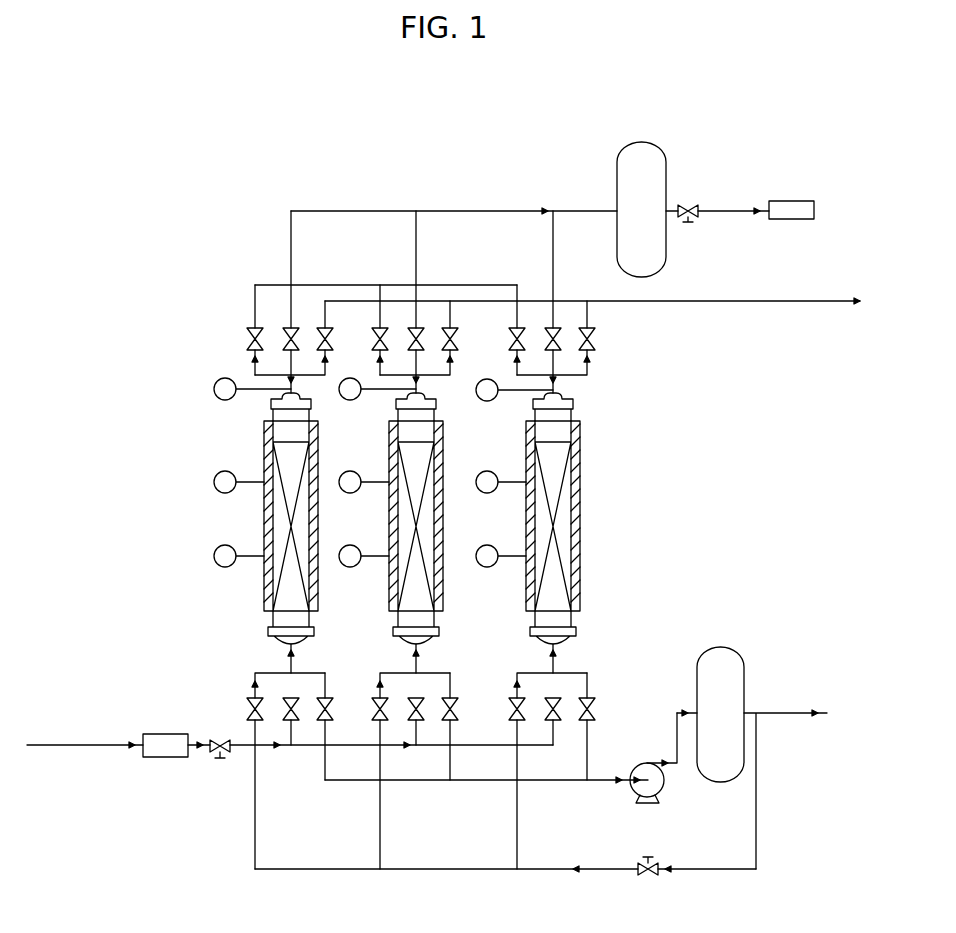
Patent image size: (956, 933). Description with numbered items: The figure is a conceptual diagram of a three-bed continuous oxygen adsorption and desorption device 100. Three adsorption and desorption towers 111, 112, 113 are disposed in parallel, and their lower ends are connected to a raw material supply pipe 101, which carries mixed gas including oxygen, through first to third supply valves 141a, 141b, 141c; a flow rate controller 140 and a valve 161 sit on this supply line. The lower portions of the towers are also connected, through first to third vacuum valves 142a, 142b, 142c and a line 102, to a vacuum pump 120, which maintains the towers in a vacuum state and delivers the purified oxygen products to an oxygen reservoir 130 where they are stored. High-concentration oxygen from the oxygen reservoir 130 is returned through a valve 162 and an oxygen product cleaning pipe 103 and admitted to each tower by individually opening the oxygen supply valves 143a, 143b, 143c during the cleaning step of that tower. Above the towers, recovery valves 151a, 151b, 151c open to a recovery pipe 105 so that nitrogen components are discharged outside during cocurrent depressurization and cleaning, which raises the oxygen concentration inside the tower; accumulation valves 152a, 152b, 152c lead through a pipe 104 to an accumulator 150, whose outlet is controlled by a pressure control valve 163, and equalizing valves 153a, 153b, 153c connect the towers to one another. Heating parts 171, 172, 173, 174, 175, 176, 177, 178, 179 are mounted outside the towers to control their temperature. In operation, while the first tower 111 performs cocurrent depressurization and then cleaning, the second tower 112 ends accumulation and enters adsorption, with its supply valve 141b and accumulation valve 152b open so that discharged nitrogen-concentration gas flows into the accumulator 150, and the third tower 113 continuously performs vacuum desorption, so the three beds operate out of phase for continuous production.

The continuous oxygen adsorption and desorption device 100 is at (115, 155).
The raw material supply pipe 101 is at (97, 745).
The line 102 is at (608, 778).
The oxygen product cleaning pipe 103 is at (603, 872).
The pipe 104 is at (580, 210).
The recovery pipe 105 is at (713, 303).
The first adsorption and desorption tower 111 is at (318, 532).
The second adsorption and desorption tower 112 is at (443, 524).
The third adsorption and desorption tower 113 is at (580, 524).
The vacuum pump 120 is at (642, 762).
The oxygen reservoir 130 is at (738, 647).
The flow rate controller 140 is at (165, 733).
The first supply valve 141a is at (291, 697).
The second supply valve 141b is at (416, 697).
The third supply valve 141c is at (554, 722).
The first vacuum valve 142a is at (325, 697).
The second vacuum valve 142b is at (450, 697).
The third vacuum valve 142c is at (587, 697).
The first oxygen supply valve 143a is at (255, 697).
The second oxygen supply valve 143b is at (380, 697).
The third oxygen supply valve 143c is at (517, 697).
The accumulator 150 is at (654, 143).
The first recovery valve 151a is at (327, 352).
The second recovery valve 151b is at (452, 352).
The third recovery valve 151c is at (589, 352).
The first accumulation valve 152a is at (291, 325).
The second accumulation valve 152b is at (416, 325).
The third accumulation valve 152c is at (553, 325).
The first equalizing valve 153a is at (255, 325).
The second equalizing valve 153b is at (380, 325).
The third equalizing valve 153c is at (517, 325).
The valve 161 is at (215, 740).
The valve 162 is at (650, 877).
The pressure control valve 163 is at (690, 205).
The heating part 171 is at (225, 567).
The heating part 172 is at (225, 493).
The heating part 173 is at (225, 400).
The heating part 174 is at (350, 567).
The heating part 175 is at (352, 493).
The heating part 176 is at (350, 400).
The heating part 177 is at (487, 567).
The heating part 178 is at (487, 493).
The heating part 179 is at (487, 401).